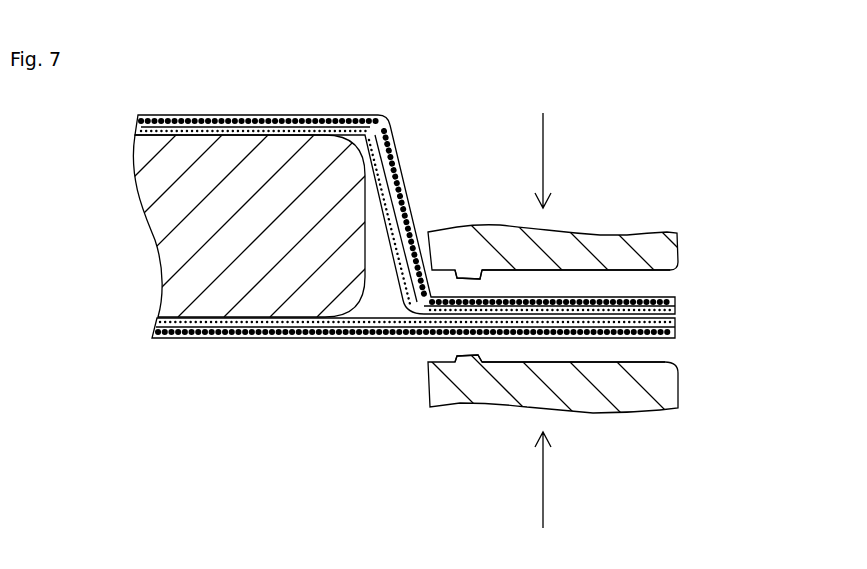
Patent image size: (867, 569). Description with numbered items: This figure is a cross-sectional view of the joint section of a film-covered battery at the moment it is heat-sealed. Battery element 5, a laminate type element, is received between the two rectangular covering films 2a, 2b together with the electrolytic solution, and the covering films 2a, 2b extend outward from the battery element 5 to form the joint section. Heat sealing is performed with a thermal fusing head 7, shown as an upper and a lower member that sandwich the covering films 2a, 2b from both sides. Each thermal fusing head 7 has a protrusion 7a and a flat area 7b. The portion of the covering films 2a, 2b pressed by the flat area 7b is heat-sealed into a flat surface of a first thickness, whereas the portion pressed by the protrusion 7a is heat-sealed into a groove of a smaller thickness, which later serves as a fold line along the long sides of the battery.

The covering film 2a is at (395, 145).
The covering film 2b is at (305, 327).
The battery element 5 is at (205, 228).
The thermal fusing head 7 is at (680, 242).
The protrusion 7a is at (478, 278).
The flat area 7b is at (600, 272).